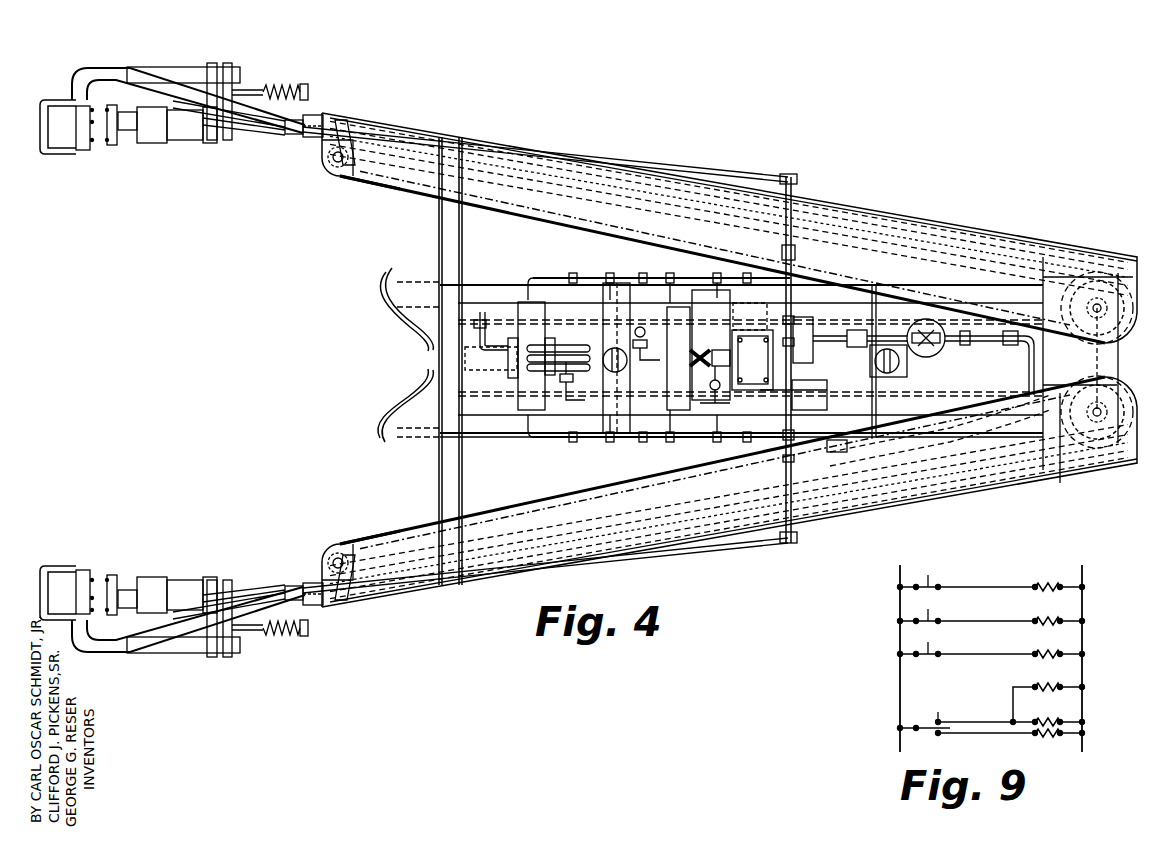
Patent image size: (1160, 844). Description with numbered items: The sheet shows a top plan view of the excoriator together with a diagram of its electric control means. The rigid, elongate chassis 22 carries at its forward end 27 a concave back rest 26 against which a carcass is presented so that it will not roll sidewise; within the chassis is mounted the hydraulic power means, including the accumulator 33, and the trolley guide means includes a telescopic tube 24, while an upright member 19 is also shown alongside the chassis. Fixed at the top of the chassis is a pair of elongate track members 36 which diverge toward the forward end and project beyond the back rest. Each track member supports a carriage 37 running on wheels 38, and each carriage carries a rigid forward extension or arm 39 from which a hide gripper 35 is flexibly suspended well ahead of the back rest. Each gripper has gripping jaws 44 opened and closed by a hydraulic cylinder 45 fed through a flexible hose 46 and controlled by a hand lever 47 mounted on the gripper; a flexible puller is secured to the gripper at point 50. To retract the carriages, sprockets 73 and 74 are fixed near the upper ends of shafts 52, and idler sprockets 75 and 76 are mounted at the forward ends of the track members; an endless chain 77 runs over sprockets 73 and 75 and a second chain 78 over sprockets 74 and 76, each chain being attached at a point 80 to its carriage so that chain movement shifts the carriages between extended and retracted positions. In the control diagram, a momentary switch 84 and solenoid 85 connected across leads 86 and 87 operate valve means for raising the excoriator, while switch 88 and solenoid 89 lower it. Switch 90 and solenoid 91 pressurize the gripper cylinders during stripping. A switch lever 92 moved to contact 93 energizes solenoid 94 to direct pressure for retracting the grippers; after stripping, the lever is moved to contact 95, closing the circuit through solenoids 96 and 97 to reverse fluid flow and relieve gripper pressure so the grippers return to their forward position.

In FIG. 4, the upright post 19 is at (438, 240).
In FIG. 4, the chassis 22 is at (478, 440).
In FIG. 4, the telescopic tube 24 is at (600, 348).
In FIG. 4, the back rest 26 is at (402, 393).
In FIG. 4, the forward end 27 is at (435, 418).
In FIG. 4, the accumulator 33 is at (943, 350).
In FIG. 4, the hide gripper 35 is at (118, 67).
In FIG. 4, the track member 36 is at (850, 207).
In FIG. 4, the carriage 37 is at (352, 130).
In FIG. 4, the wheel 38 is at (330, 120).
In FIG. 4, the forward extension or arm 39 is at (295, 112).
In FIG. 4, the gripping jaw 44 is at (88, 144).
In FIG. 4, the hydraulic cylinder 45 is at (182, 131).
In FIG. 4, the flexible hose 46 is at (243, 132).
In FIG. 4, the hand lever 47 is at (180, 67).
In FIG. 4, the puller attachment point 50 is at (298, 133).
In FIG. 4, the shaft 52 is at (1090, 345).
In FIG. 4, the sprocket 73 is at (1095, 305).
In FIG. 4, the sprocket 74 is at (1060, 470).
In FIG. 4, the idler sprocket 75 is at (350, 173).
In FIG. 4, the idler sprocket 76 is at (357, 543).
In FIG. 4, the endless chain 77 is at (527, 214).
In FIG. 4, the chain 78 is at (541, 502).
In FIG. 4, the attachment point 80 is at (360, 187).
In FIG. 9, the switch 84 is at (942, 586).
In FIG. 9, the solenoid 85 is at (1059, 575).
In FIG. 9, the lead 86 is at (900, 748).
In FIG. 9, the lead 87 is at (1082, 748).
In FIG. 9, the switch 88 is at (942, 620).
In FIG. 9, the solenoid 89 is at (1046, 618).
In FIG. 9, the switch 90 is at (938, 653).
In FIG. 9, the solenoid 91 is at (1046, 651).
In FIG. 9, the switch lever 92 is at (924, 726).
In FIG. 9, the contact 93 is at (938, 736).
In FIG. 9, the solenoid 94 is at (1048, 736).
In FIG. 9, the contact 95 is at (942, 719).
In FIG. 9, the solenoid 96 is at (1046, 683).
In FIG. 9, the solenoid 97 is at (1050, 716).